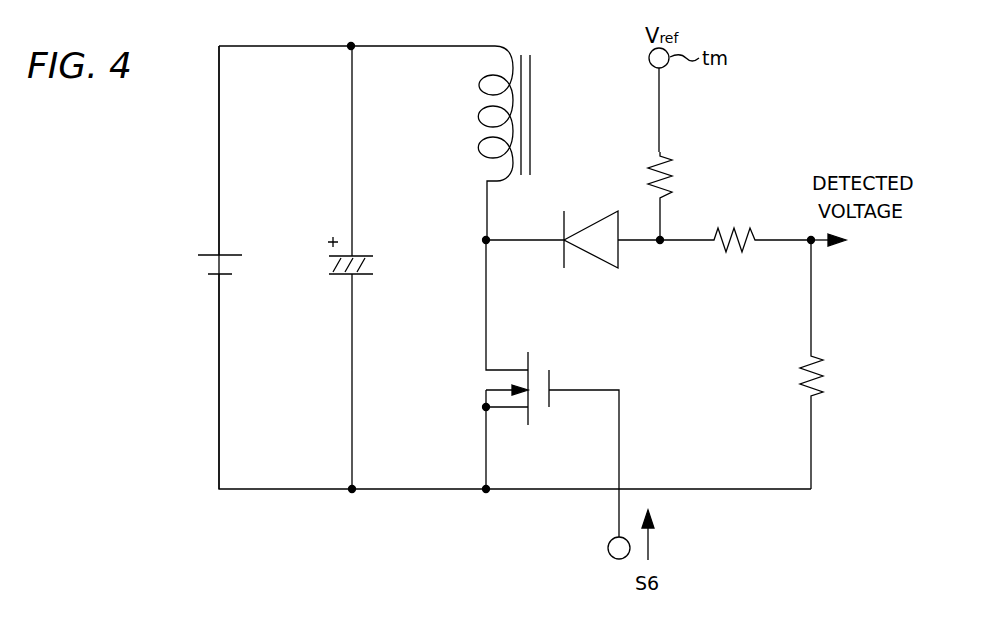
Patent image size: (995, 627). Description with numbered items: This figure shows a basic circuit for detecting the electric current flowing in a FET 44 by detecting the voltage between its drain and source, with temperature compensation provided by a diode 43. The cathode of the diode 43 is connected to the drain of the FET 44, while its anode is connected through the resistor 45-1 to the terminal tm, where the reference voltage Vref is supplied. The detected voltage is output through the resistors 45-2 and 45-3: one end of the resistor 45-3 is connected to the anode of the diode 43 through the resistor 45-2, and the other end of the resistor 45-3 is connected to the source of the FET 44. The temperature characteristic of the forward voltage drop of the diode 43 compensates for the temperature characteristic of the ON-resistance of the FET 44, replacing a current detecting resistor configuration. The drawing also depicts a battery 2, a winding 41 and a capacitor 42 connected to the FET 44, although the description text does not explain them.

The battery 2 is at (203, 254).
The inductor (transformer winding) 41 is at (484, 143).
The capacitor 42 is at (367, 258).
The diode 43 is at (552, 229).
The FET 44 is at (530, 360).
The resistor 45-1 is at (686, 177).
The resistor 45-2 is at (735, 258).
The resistor 45-3 is at (839, 375).